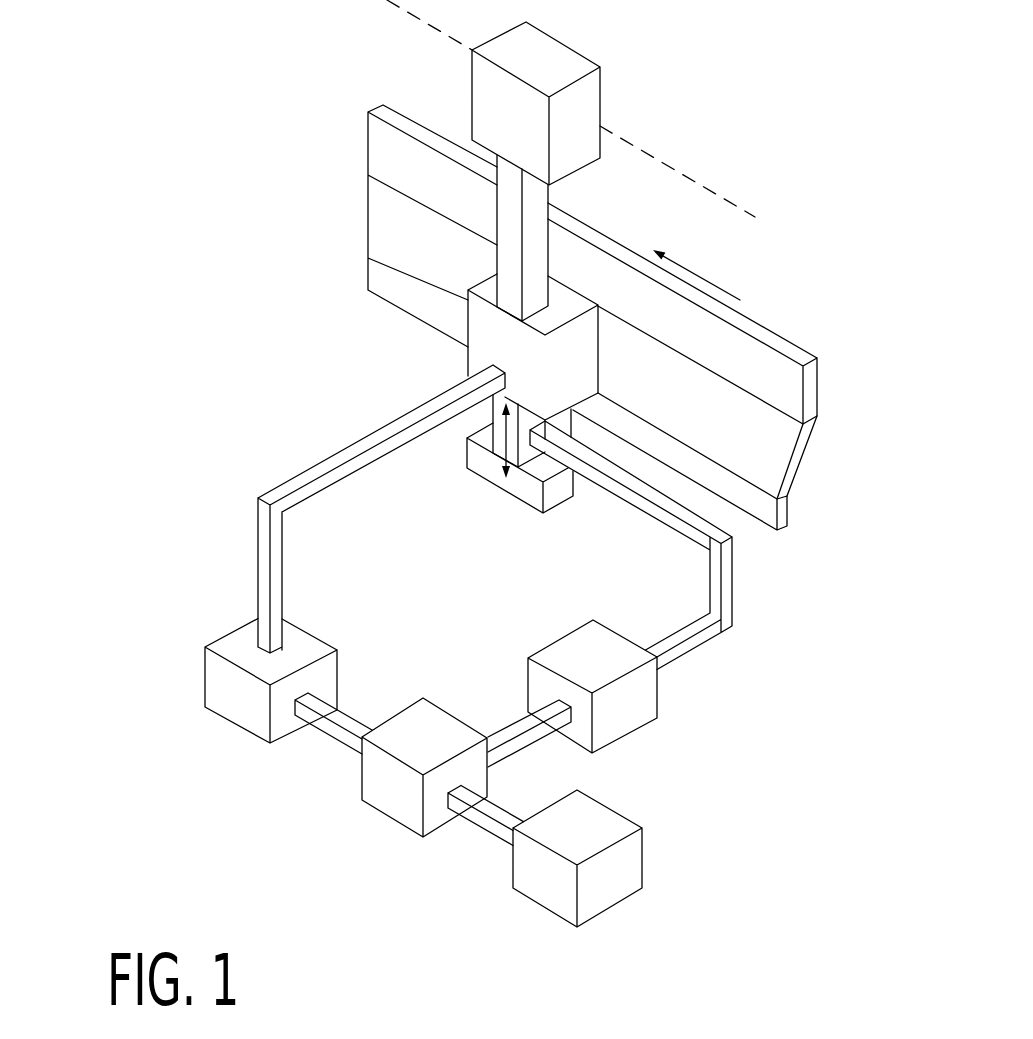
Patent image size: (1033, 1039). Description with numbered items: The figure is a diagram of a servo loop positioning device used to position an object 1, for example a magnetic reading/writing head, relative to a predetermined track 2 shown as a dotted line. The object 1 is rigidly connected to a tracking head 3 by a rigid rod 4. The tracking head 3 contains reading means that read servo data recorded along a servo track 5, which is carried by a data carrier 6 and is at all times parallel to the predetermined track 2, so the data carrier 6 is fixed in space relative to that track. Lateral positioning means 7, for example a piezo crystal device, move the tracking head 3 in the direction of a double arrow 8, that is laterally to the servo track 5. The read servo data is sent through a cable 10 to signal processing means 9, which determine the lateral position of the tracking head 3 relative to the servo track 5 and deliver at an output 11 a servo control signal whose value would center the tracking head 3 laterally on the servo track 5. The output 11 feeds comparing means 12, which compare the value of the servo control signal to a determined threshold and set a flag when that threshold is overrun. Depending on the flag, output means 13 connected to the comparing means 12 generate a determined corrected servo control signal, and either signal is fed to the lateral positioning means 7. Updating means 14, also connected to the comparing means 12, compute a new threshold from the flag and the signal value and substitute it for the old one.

The object 1 is at (550, 52).
The predetermined track 2 is at (668, 165).
The tracking head 3 is at (497, 348).
The rigid rod 4 is at (535, 220).
The servo track 5 is at (743, 427).
The data carrier 6 is at (740, 333).
The lateral positioning means 7 is at (540, 460).
The double arrow 8 is at (490, 437).
The signal processing means 9 is at (253, 688).
The cable 10 is at (278, 592).
The output 11 is at (317, 722).
The comparing means 12 is at (390, 780).
The output means 13 is at (610, 713).
The updating means 14 is at (602, 880).